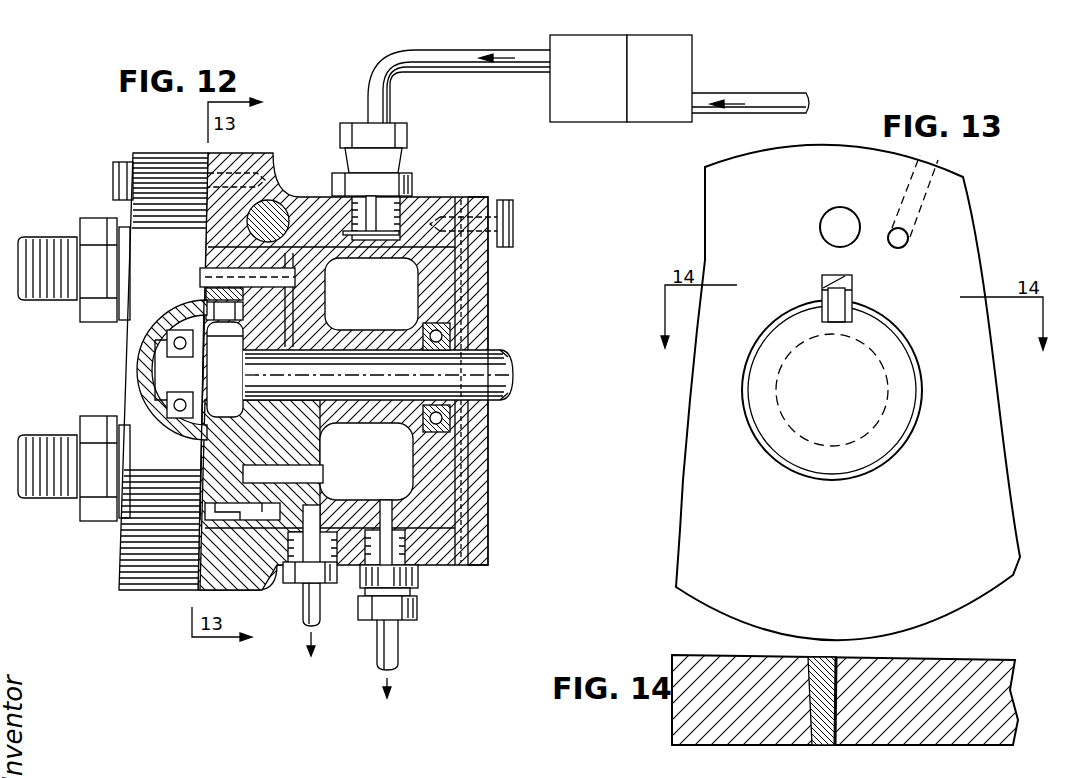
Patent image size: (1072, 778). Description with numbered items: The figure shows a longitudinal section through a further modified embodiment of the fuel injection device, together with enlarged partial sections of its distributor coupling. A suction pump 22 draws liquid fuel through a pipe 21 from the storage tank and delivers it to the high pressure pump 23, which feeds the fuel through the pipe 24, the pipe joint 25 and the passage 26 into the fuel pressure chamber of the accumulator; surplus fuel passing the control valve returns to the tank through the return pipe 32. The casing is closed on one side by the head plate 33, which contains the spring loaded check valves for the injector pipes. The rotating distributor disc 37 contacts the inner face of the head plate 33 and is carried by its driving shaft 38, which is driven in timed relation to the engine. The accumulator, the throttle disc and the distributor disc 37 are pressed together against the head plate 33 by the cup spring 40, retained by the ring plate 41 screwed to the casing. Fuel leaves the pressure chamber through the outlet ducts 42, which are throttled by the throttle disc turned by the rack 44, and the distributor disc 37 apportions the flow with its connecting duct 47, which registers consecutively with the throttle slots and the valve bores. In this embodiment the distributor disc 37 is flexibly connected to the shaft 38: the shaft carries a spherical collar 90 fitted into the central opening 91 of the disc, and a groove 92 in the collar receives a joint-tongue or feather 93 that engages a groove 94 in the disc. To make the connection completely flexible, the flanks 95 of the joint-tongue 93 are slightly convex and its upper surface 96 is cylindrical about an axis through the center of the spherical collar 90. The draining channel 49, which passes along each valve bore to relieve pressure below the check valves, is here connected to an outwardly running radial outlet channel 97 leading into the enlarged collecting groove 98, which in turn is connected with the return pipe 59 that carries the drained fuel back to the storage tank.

In FIG. 12, the pipe 21 is at (784, 100).
In FIG. 12, the suction pump 22 is at (640, 50).
In FIG. 12, the high pressure pump 23 is at (576, 50).
In FIG. 12, the pipe 24 is at (500, 62).
In FIG. 12, the pipe joint 25 is at (412, 186).
In FIG. 12, the passage 26 is at (366, 247).
In FIG. 12, the return pipe 32 is at (386, 652).
In FIG. 12, the head plate 33 is at (119, 590).
In FIG. 12, the distributor disc 37 is at (218, 477).
In FIG. 13, the distributor disc 37 is at (717, 198).
In FIG. 14, the distributor disc 37 is at (930, 672).
In FIG. 12, the driving shaft 38 is at (479, 367).
In FIG. 12, the cup spring 40 is at (458, 563).
In FIG. 12, the ring plate 41 is at (489, 535).
In FIG. 12, the outlet ducts 42 is at (353, 213).
In FIG. 12, the rack 44 is at (274, 155).
In FIG. 12, the apportioning connecting duct 47 is at (212, 272).
In FIG. 13, the apportioning connecting duct 47 is at (857, 210).
In FIG. 13, the draining channel 49 is at (909, 240).
In FIG. 12, the return pipe 59 is at (303, 620).
In FIG. 12, the spherical collar 90 is at (226, 400).
In FIG. 13, the spherical collar 90 is at (875, 440).
In FIG. 12, the central opening 91 is at (205, 430).
In FIG. 13, the central opening 91 is at (753, 433).
In FIG. 12, the groove 92 is at (229, 338).
In FIG. 12, the joint-tongue 93 is at (203, 327).
In FIG. 13, the joint-tongue 93 is at (835, 312).
In FIG. 14, the joint-tongue 93 is at (840, 673).
In FIG. 12, the groove 94 is at (207, 303).
In FIG. 13, the flanks 95 is at (822, 290).
In FIG. 13, the upper surface 96 is at (838, 284).
In FIG. 12, the radial outlet channel 97 is at (262, 213).
In FIG. 13, the radial outlet channel 97 is at (923, 200).
In FIG. 12, the collecting groove 98 is at (200, 522).